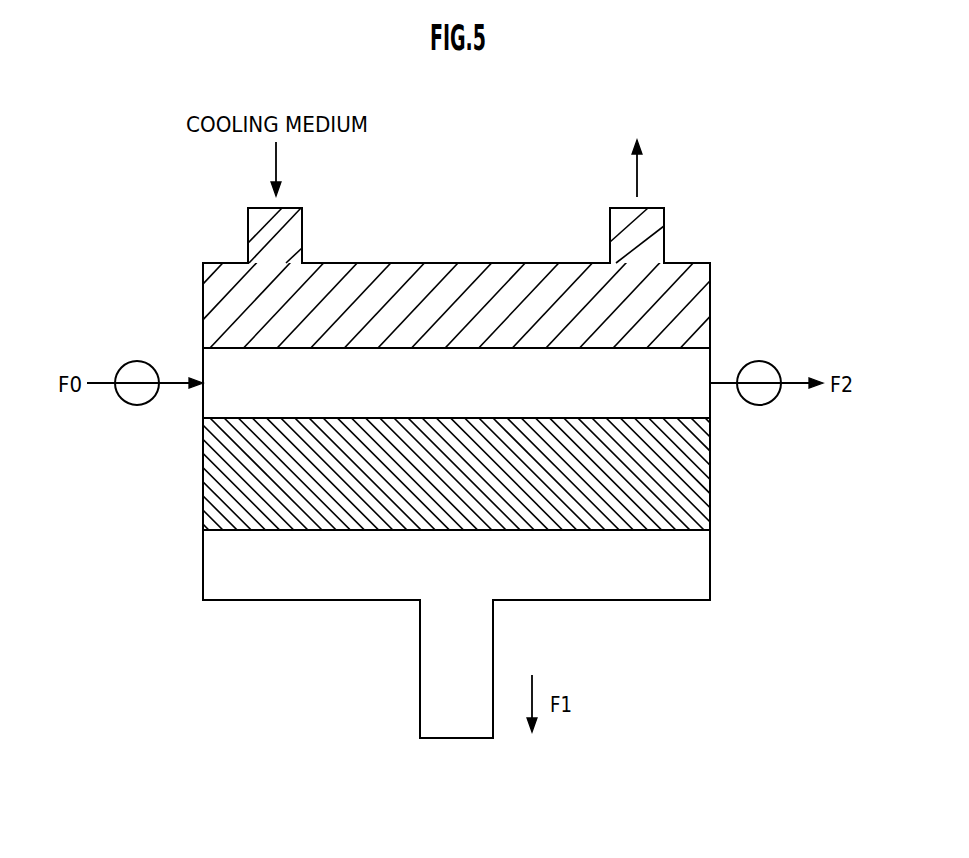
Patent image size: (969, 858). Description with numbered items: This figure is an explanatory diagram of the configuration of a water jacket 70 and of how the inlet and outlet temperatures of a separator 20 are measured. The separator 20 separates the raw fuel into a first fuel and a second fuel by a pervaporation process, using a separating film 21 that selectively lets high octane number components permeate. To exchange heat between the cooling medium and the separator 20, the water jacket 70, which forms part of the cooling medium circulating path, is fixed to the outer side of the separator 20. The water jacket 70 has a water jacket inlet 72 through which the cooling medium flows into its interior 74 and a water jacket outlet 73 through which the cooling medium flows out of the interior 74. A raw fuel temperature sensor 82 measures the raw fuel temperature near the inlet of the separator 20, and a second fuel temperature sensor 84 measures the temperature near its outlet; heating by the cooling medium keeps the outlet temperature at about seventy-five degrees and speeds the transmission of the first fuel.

The separator 20 is at (197, 362).
The separating film 21 is at (226, 508).
The water jacket 70 is at (487, 253).
The water jacket inlet 72 is at (302, 228).
The water jacket outlet 73 is at (664, 228).
The interior 74 is at (282, 237).
The raw fuel temperature sensor 82 is at (137, 401).
The second fuel temperature sensor 84 is at (759, 401).